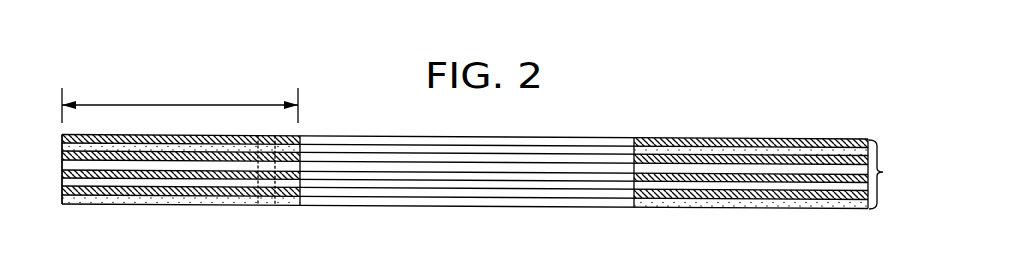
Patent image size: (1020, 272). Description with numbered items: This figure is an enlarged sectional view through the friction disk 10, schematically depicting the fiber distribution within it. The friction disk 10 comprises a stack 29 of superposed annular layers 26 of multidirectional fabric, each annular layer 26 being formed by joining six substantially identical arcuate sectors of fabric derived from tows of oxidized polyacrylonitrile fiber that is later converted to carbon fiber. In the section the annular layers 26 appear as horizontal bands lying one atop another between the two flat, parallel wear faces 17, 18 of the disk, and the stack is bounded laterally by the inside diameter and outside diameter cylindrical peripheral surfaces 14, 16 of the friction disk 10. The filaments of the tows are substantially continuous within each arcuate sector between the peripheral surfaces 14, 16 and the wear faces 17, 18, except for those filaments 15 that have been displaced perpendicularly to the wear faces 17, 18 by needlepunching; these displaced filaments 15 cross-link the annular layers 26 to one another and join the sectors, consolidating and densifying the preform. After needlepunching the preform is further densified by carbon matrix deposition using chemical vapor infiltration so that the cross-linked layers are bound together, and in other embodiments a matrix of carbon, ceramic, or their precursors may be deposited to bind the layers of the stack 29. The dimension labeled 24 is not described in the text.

The friction disk 10 is at (680, 115).
The inside diameter cylindrical peripheral surface 14 is at (298, 168).
The filaments 15 is at (272, 199).
The outside diameter cylindrical peripheral surface 16 is at (52, 199).
The wear face 17 is at (342, 135).
The wear face 18 is at (163, 204).
The length of end section 24 is at (177, 103).
The annular layers 26 is at (616, 183).
The stack 29 is at (881, 142).